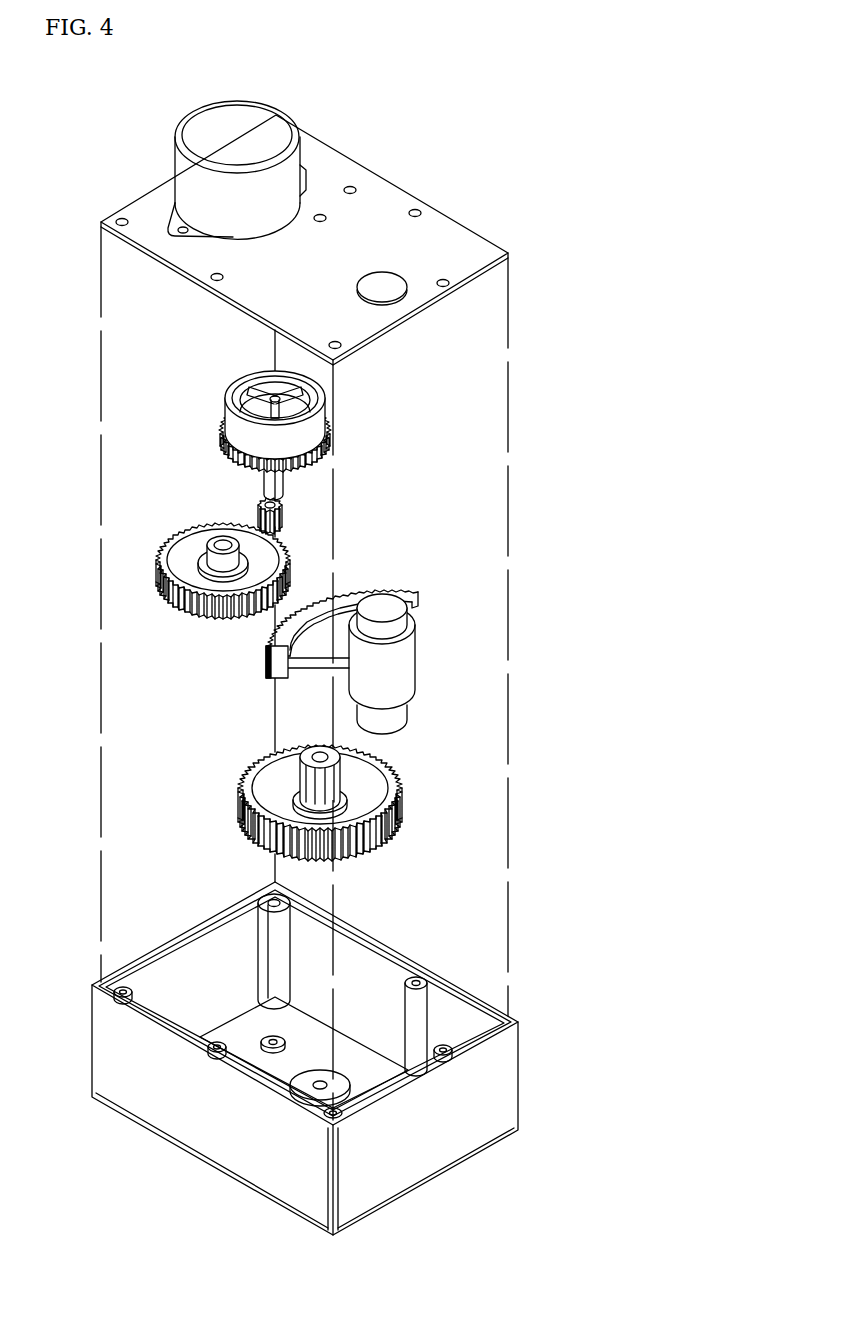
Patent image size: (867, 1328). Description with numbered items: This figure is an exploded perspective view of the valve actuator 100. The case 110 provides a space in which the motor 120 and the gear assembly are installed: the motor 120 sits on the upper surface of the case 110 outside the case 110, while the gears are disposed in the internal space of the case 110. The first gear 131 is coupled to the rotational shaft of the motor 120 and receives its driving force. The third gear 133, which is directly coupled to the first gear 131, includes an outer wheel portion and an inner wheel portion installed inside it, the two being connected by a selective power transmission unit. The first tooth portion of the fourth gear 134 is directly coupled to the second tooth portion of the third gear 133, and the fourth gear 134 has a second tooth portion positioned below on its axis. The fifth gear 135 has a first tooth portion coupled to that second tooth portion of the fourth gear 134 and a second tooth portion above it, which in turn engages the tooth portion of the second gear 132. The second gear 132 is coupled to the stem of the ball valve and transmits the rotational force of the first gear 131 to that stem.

The valve actuator 100 is at (474, 140).
The case 110 is at (392, 940).
The motor 120 is at (178, 162).
The first gear 131 is at (258, 507).
The second gear 132 is at (308, 650).
The third gear 133 is at (232, 402).
The fourth gear 134 is at (178, 557).
The fifth gear 135 is at (277, 792).